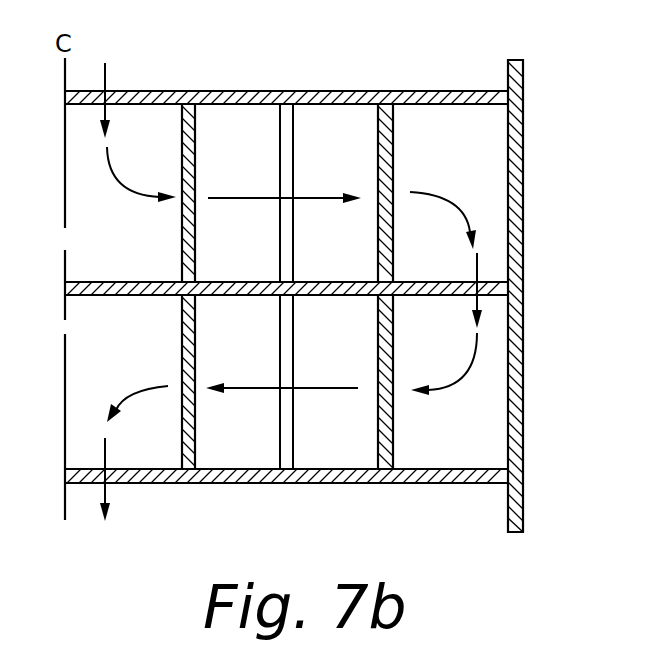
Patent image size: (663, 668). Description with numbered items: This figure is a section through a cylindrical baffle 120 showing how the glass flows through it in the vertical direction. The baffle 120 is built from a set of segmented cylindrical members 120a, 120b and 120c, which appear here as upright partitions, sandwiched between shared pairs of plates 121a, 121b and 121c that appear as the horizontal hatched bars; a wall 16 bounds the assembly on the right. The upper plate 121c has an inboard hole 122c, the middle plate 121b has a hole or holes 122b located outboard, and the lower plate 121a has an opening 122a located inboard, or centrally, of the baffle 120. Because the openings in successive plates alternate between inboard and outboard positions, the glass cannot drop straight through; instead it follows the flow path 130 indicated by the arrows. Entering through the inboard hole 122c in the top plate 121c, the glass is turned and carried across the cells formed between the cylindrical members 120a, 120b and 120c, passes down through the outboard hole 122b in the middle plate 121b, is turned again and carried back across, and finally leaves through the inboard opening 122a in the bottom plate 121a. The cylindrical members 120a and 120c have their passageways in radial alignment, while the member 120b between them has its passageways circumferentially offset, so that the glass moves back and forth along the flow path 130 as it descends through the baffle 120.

The wall 16 is at (515, 150).
The cylindrical baffle 120 is at (329, 281).
The segmented cylindrical member 120a is at (181, 240).
The segmented cylindrical member 120b is at (279, 152).
The segmented cylindrical member 120c is at (377, 122).
The plate 121a is at (462, 469).
The plate 121b is at (425, 281).
The plate 121c is at (455, 92).
The opening 122a is at (97, 483).
The hole 122b is at (483, 284).
The hole 122c is at (112, 90).
The flow path 130 is at (125, 139).